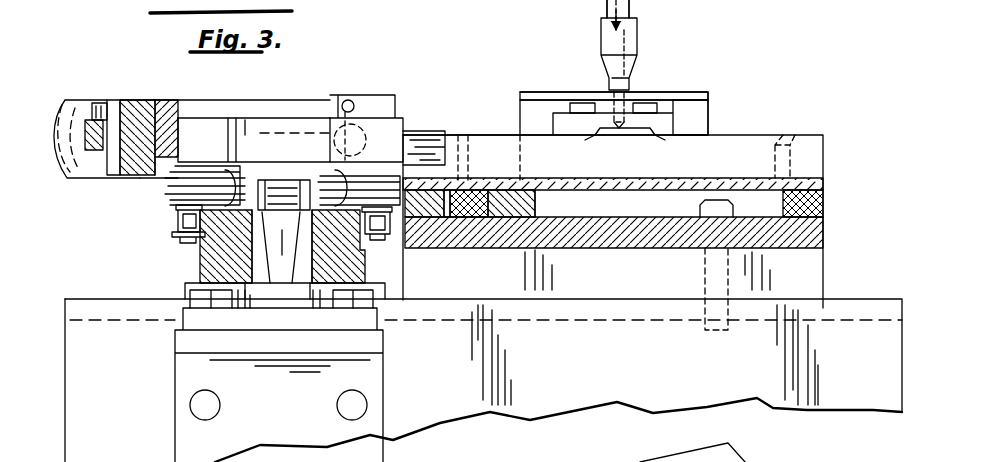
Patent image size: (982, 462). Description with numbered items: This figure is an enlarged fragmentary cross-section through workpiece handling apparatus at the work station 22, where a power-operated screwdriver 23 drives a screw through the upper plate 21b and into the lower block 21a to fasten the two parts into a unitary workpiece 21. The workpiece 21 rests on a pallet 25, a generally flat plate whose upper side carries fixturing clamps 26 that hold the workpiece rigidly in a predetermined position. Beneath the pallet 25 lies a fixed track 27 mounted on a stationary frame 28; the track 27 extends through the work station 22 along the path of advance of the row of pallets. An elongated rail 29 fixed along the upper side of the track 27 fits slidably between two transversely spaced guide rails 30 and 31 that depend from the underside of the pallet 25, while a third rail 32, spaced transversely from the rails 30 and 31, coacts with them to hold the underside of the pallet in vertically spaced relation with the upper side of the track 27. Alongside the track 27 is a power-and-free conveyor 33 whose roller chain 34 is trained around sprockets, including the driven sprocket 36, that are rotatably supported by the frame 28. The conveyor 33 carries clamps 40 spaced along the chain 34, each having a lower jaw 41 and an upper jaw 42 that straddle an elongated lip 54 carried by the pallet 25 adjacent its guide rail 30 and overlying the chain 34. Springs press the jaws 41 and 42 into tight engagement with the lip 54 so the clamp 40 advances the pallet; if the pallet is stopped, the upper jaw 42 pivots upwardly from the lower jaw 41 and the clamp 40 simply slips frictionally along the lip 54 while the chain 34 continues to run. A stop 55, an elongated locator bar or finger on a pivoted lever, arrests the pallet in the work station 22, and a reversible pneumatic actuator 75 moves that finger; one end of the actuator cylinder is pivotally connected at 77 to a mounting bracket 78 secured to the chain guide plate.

The workpiece 21 is at (562, 94).
The lower block 21a is at (668, 94).
The upper plate 21b is at (708, 114).
The work station 22 is at (655, 60).
The power-operated screwdriver 23 is at (635, 32).
The pallet 25 is at (768, 133).
The fixturing clamp 26 is at (648, 135).
The track 27 is at (645, 250).
The stationary frame 28 is at (838, 312).
The rail 29 is at (470, 245).
The guide rail 30 is at (425, 243).
The guide rail 31 is at (537, 207).
The third rail 32 is at (825, 216).
The power-and-free conveyor 33 is at (170, 212).
The roller chain 34 is at (175, 236).
The driven sprocket 36 is at (200, 258).
The clamp 40 is at (214, 175).
The lower jaw 41 is at (300, 231).
The upper jaw 42 is at (358, 170).
The lip 54 is at (410, 185).
The stop 55 is at (432, 128).
The pneumatic actuator 75 is at (63, 100).
The pivotal connection 77 is at (108, 104).
The mounting bracket 78 is at (140, 102).